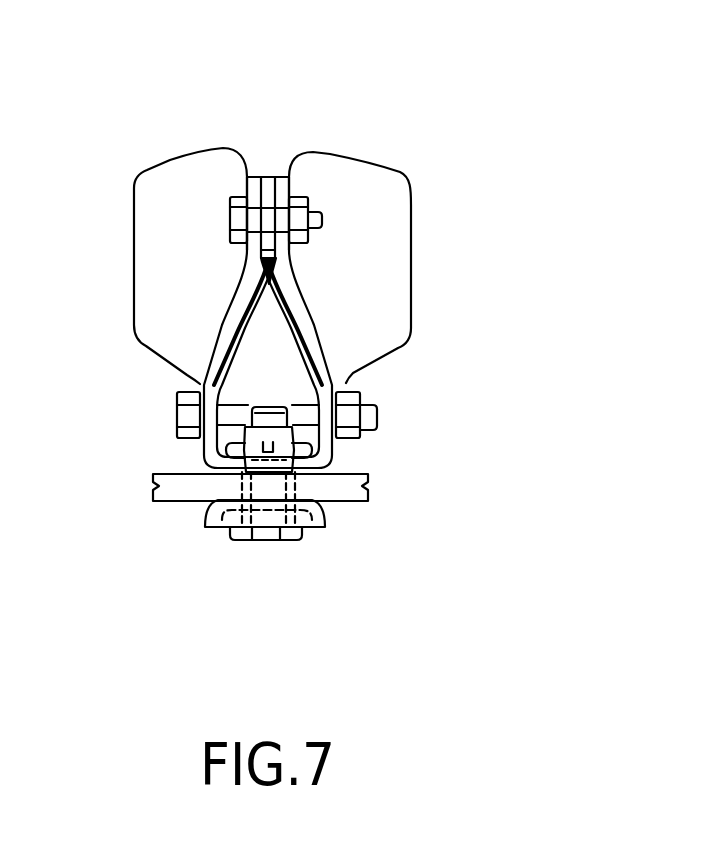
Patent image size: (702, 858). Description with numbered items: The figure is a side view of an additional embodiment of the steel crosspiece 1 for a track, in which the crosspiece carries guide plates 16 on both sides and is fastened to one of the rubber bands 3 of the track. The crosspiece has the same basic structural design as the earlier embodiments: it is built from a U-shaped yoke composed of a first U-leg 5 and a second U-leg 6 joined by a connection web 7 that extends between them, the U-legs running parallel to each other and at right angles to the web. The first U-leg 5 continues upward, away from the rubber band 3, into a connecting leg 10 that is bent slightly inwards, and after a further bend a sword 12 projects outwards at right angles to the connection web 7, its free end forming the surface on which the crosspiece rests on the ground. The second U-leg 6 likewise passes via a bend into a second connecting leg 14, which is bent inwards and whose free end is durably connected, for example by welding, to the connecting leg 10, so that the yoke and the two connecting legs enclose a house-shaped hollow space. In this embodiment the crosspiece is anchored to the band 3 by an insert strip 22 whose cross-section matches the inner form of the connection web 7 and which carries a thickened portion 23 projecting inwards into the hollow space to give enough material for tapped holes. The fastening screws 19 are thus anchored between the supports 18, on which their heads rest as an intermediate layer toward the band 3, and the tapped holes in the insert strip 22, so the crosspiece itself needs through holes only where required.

The steel crosspiece 1 is at (460, 152).
The rubber band 3 is at (170, 490).
The first U-leg 5 is at (212, 466).
The second U-leg 6 is at (330, 466).
The connection web 7 is at (300, 469).
The connecting leg 10 is at (248, 315).
The sword 12 is at (247, 183).
The second connecting leg 14 is at (308, 333).
The guide plate 16 is at (346, 172).
The support 18 is at (207, 522).
The fastening screw 19 is at (275, 541).
The insert strip 22 is at (202, 464).
The thickened portion 23 is at (290, 437).